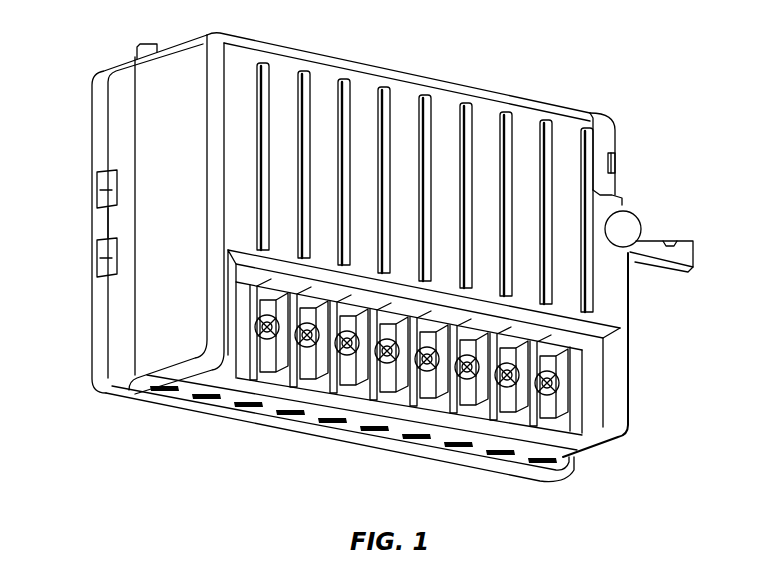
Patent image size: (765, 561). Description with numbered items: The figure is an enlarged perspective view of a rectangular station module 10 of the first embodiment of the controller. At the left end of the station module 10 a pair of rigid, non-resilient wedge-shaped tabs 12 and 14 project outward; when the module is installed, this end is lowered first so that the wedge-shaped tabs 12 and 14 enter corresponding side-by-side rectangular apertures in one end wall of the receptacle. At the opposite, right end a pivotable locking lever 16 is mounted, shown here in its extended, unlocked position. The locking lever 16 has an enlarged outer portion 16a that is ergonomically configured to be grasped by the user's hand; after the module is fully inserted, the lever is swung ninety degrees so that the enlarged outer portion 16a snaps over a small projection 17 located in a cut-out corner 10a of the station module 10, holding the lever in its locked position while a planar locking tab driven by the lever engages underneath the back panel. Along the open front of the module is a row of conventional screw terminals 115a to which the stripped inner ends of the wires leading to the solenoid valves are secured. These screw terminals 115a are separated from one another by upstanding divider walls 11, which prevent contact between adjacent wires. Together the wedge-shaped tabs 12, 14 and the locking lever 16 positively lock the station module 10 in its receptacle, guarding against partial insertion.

The station module 10 is at (563, 86).
The cut-out corner 10a is at (612, 128).
The upstanding divider walls 11 is at (522, 412).
The wedge-shaped tab 12 is at (97, 185).
The wedge-shaped tab 14 is at (97, 254).
The locking lever 16 is at (660, 263).
The enlarged outer portion 16a is at (695, 237).
The small projection 17 is at (615, 163).
The screw terminals 115a is at (560, 377).